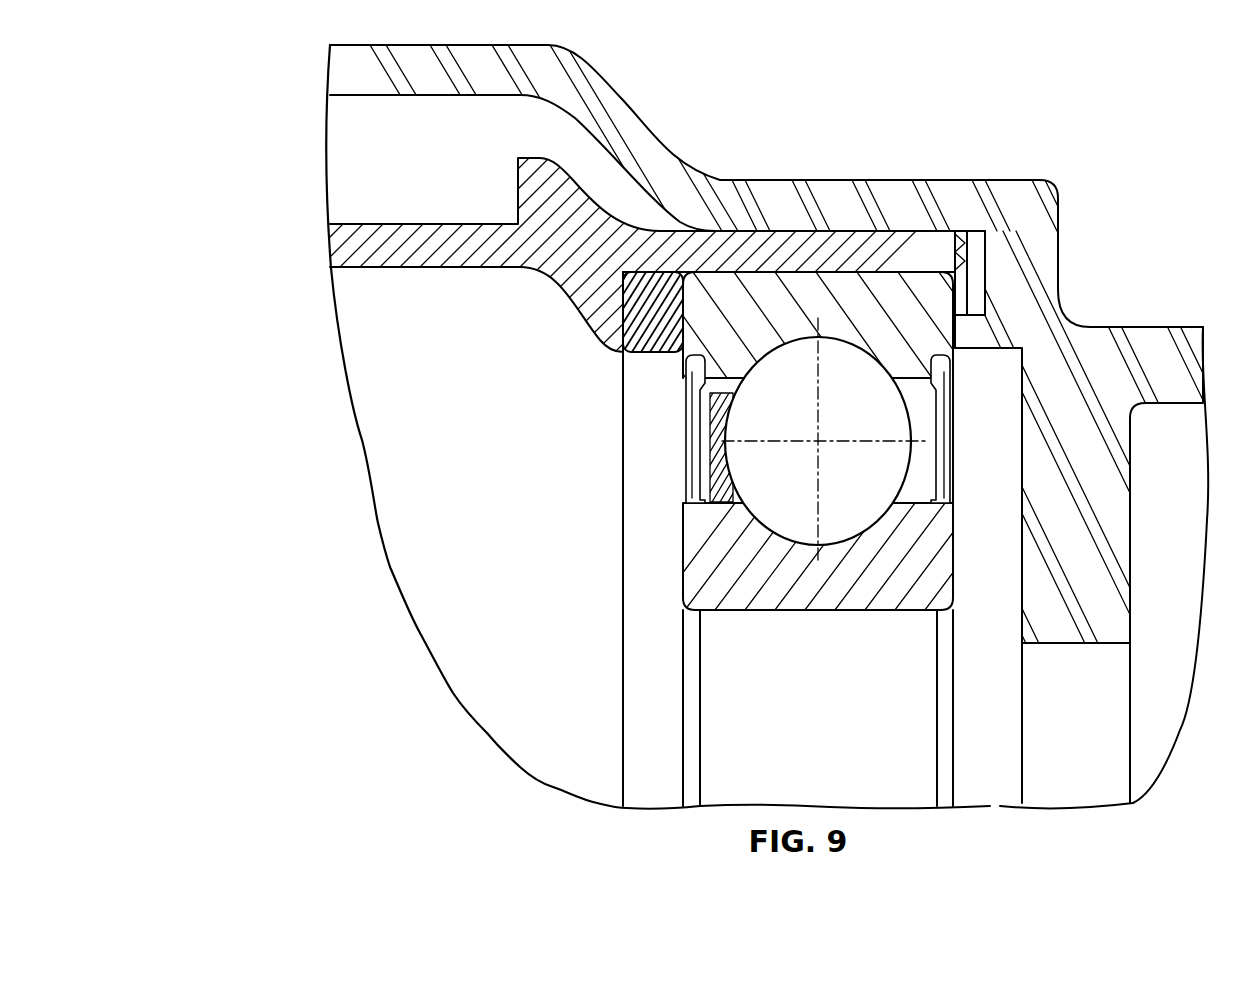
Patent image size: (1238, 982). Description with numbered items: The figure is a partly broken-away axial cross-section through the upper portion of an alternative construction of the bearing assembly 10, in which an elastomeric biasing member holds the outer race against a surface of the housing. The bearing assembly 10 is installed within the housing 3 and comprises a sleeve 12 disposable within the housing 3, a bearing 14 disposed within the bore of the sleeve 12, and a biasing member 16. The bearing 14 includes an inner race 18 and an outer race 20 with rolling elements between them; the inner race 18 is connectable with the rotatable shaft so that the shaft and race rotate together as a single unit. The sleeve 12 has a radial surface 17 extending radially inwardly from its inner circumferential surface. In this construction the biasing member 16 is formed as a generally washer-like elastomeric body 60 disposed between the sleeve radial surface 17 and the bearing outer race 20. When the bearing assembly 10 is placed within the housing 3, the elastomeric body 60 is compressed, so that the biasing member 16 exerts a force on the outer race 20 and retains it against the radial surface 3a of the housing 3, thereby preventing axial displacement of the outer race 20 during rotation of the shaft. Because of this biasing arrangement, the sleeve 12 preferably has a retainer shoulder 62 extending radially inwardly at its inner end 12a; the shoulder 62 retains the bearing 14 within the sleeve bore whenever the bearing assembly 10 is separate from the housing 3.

The housing 3 is at (860, 155).
The radial surface of the housing 3a is at (955, 320).
The bearing assembly 10 is at (290, 458).
The sleeve 12 is at (362, 222).
The inner end of the sleeve 12a is at (965, 232).
The bearing 14 is at (546, 480).
The biasing member 16 is at (610, 323).
The radial surface of the sleeve 17 is at (650, 310).
The inner race 18 is at (690, 568).
The outer race 20 is at (690, 364).
The elastomeric body 60 is at (632, 437).
The retainer shoulder 62 is at (967, 278).